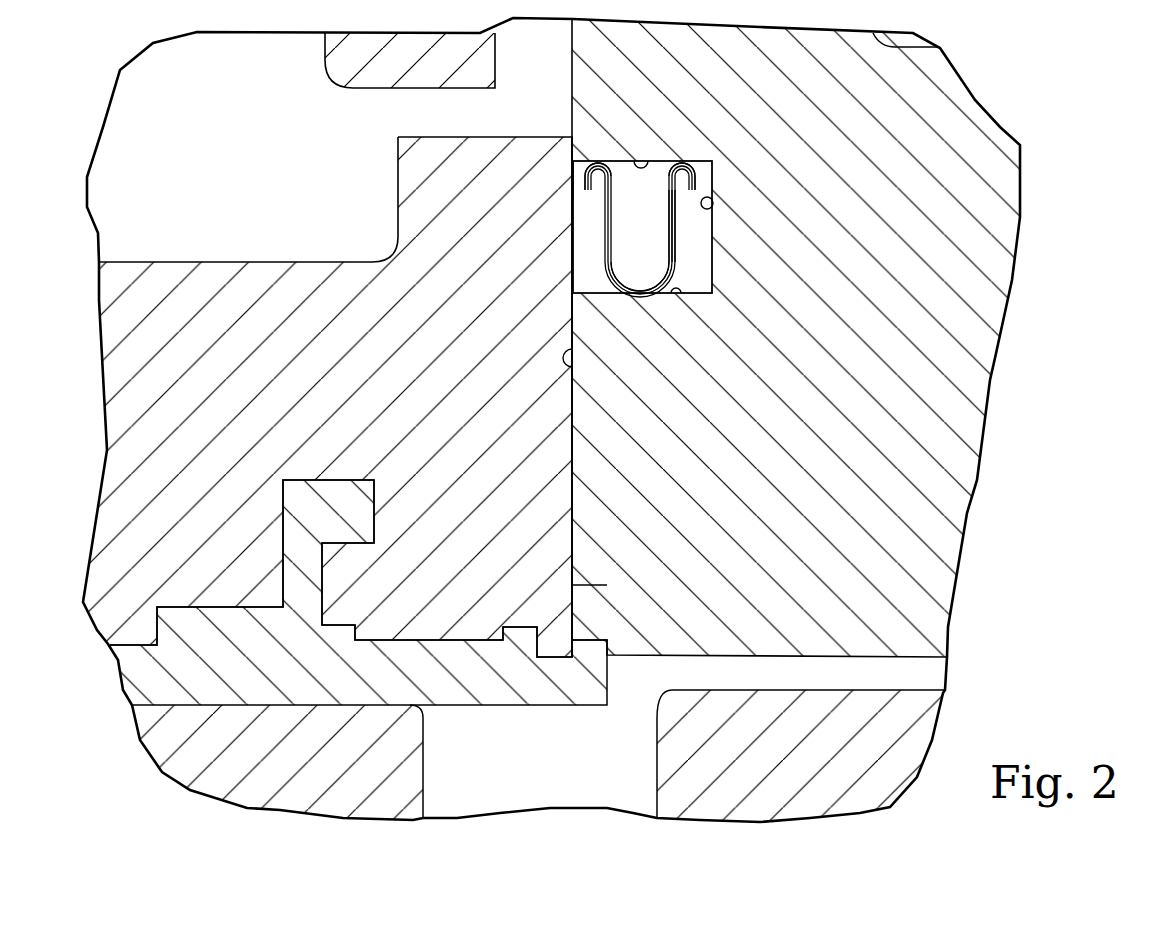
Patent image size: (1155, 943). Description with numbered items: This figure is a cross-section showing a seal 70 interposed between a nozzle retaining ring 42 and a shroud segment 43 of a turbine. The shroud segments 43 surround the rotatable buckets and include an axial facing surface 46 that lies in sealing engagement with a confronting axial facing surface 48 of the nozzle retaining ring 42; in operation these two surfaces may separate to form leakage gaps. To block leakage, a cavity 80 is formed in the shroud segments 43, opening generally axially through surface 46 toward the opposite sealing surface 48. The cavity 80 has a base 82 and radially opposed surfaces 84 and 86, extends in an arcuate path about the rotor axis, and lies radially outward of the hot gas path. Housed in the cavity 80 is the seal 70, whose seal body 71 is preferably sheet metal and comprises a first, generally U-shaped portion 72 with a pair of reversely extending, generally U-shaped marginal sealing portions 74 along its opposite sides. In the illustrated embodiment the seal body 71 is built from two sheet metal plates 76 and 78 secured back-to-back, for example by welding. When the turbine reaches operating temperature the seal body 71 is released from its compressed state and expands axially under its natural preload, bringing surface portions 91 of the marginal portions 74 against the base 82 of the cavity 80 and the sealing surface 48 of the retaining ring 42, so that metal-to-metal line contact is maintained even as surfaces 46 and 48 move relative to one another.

The nozzle retaining ring 42 is at (362, 380).
The shroud segments 43 is at (950, 495).
The axial facing surface 46 is at (573, 368).
The axial facing surface 48 is at (573, 452).
The seal 70 is at (703, 284).
The seal body 71 is at (682, 222).
The U-shaped portion 72 is at (668, 206).
The marginal sealing portions 74 is at (603, 158).
The sheet metal plate 76 is at (667, 252).
The sheet metal plate 78 is at (682, 248).
The cavity 80 is at (585, 295).
The base 82 is at (714, 204).
The radially opposed surface 84 is at (677, 294).
The radially opposed surface 86 is at (646, 158).
The surface portions 91 is at (574, 178).